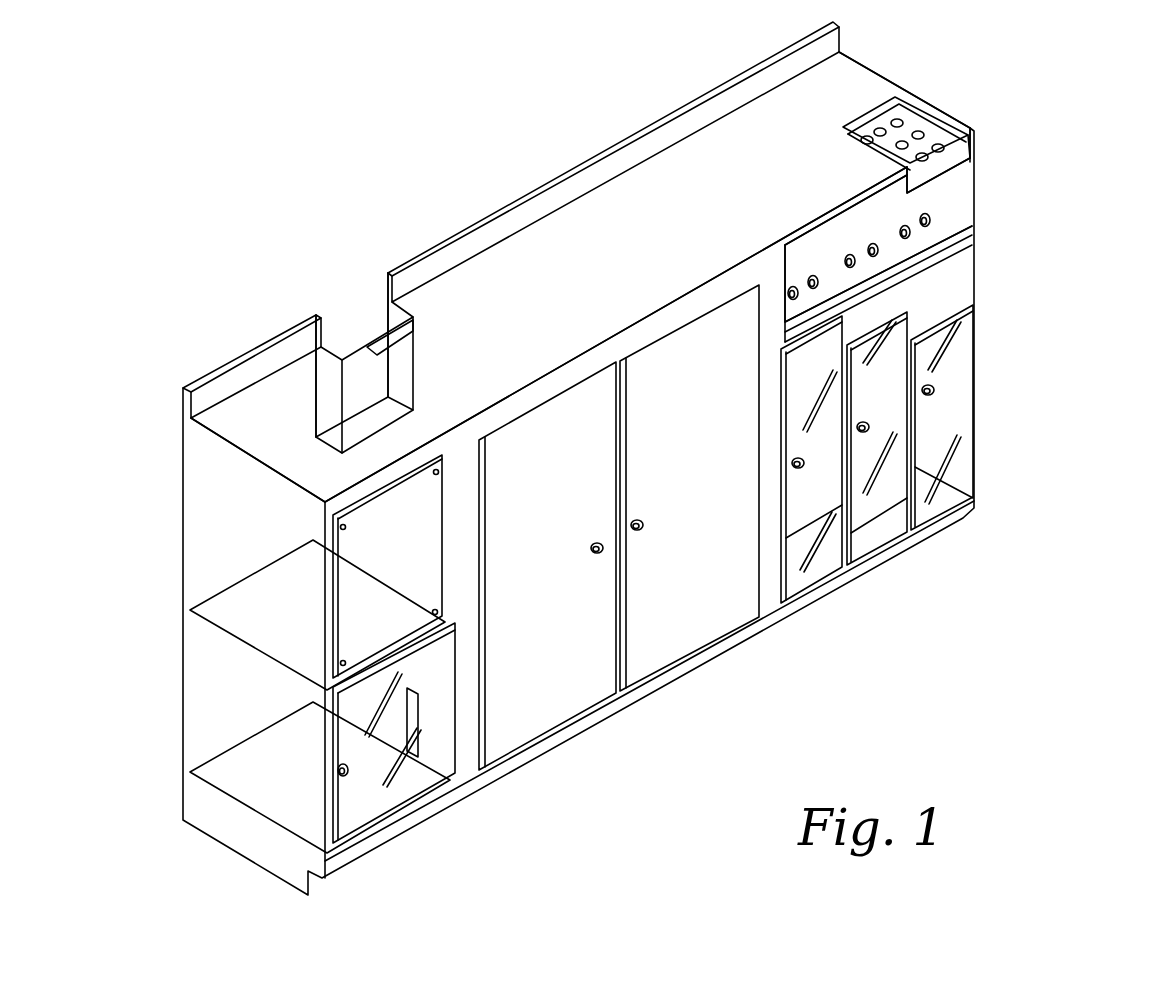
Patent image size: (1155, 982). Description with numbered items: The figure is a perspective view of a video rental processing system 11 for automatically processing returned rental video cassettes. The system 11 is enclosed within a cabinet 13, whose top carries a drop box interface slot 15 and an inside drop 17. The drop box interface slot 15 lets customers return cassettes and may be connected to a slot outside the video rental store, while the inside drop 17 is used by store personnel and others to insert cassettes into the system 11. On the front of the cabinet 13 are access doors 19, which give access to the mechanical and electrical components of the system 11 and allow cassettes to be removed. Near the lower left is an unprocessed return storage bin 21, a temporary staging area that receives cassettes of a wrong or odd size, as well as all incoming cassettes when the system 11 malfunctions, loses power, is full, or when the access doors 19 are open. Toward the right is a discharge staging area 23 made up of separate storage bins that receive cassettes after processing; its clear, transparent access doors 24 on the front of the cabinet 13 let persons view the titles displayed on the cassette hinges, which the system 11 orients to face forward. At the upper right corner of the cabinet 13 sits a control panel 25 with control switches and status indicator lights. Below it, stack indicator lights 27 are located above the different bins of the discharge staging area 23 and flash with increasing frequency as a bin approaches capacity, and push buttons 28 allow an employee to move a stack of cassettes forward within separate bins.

The video rental processing system 11 is at (1040, 471).
The cabinet 13 is at (825, 92).
The drop box interface slot 15 is at (358, 332).
The inside drop 17 is at (398, 300).
The access doors 19 is at (417, 537).
The unprocessed return storage bin 21 is at (372, 795).
The discharge staging area 23 is at (887, 347).
The transparent access doors 24 is at (957, 358).
The control panel 25 is at (905, 135).
The stack indicator lights 27 is at (928, 212).
The push buttons 28 is at (903, 238).